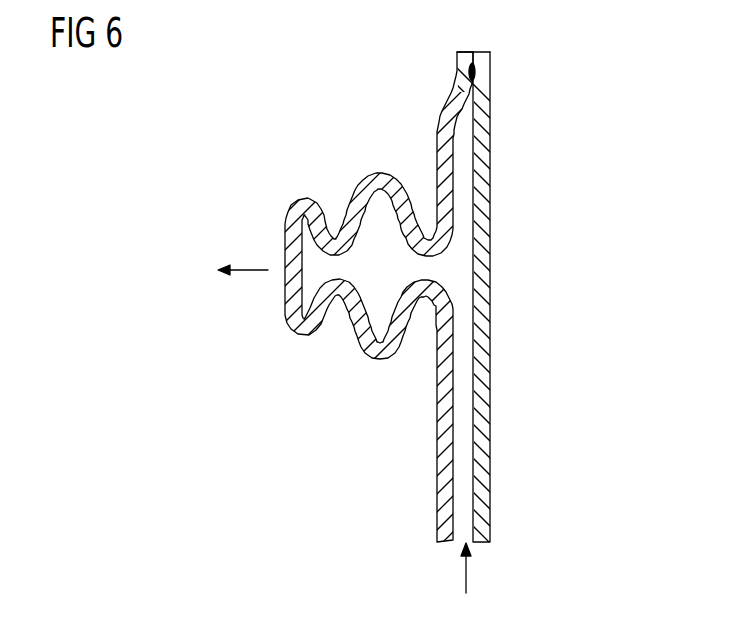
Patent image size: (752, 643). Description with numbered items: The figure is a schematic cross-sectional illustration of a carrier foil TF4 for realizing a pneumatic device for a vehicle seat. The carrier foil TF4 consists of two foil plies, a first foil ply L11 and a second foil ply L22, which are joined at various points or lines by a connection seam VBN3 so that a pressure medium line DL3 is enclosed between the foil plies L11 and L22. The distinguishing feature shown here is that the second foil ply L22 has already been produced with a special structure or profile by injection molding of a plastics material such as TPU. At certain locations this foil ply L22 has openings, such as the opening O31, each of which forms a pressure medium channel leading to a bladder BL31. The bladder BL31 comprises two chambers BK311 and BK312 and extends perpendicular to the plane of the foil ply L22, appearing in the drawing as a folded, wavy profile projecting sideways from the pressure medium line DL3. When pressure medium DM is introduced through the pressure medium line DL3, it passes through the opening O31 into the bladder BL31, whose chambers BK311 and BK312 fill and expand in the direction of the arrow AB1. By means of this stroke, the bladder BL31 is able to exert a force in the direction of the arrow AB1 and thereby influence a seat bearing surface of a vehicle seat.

The bladder BL31 is at (376, 297).
The second foil ply L22 is at (452, 120).
The first foil ply L11 is at (482, 120).
The carrier foil TF4 is at (492, 63).
The connection seam VBN3 is at (468, 72).
The opening O31 is at (432, 270).
The pressure medium line DL3 is at (466, 405).
The first chamber BK311 is at (312, 278).
The second chamber BK312 is at (382, 292).
The arrow AB1 is at (243, 256).
The pressure medium DM is at (480, 568).